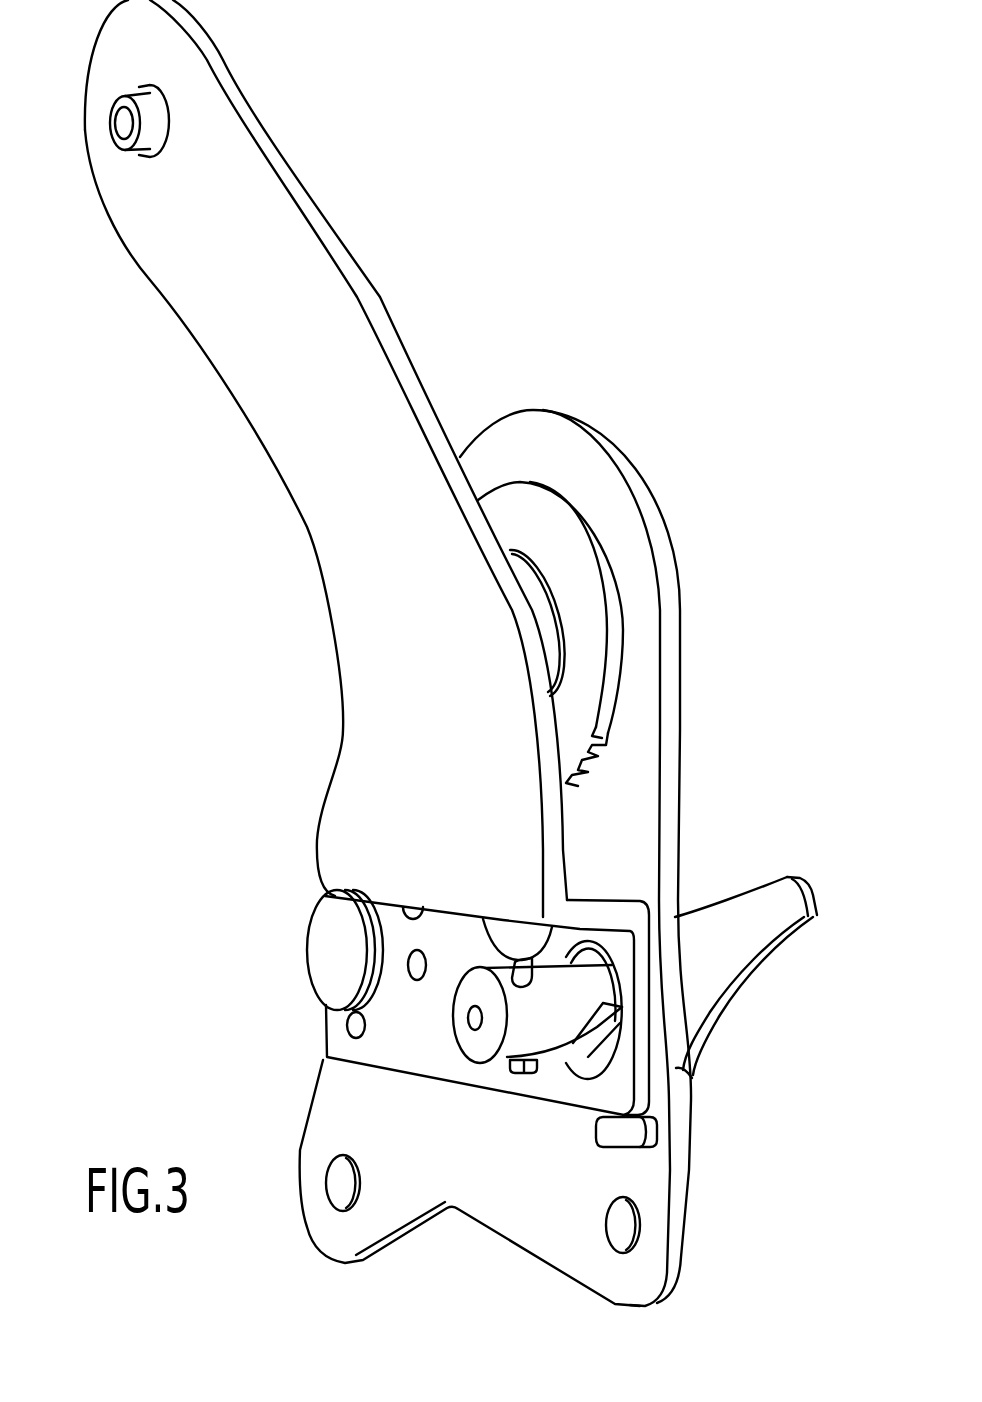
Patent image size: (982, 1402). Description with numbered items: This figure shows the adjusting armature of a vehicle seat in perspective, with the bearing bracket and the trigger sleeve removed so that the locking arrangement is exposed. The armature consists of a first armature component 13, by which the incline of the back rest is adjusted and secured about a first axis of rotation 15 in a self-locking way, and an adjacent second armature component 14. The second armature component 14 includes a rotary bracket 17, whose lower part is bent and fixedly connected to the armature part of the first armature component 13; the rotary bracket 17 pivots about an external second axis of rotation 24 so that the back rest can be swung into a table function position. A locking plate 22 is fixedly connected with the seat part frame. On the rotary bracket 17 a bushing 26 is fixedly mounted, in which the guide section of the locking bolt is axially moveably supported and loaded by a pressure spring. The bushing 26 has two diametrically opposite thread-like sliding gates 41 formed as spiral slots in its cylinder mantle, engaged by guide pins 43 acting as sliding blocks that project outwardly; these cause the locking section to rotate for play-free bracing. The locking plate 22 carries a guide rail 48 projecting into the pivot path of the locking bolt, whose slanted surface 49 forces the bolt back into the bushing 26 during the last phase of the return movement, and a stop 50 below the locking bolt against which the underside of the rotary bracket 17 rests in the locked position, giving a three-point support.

The first armature component 13 is at (580, 411).
The second armature component 14 is at (411, 350).
The first axis of rotation 15 is at (535, 627).
The rotary bracket 17 is at (273, 335).
The locking plate 22 is at (418, 1186).
The second axis of rotation 24 is at (33, 128).
The bushing 26 is at (472, 1044).
The sliding gate 41 is at (513, 988).
The guide pin 43 is at (530, 955).
The guide rail 48 is at (800, 930).
The slanted surface 49 is at (762, 907).
The stop 50 is at (630, 1133).